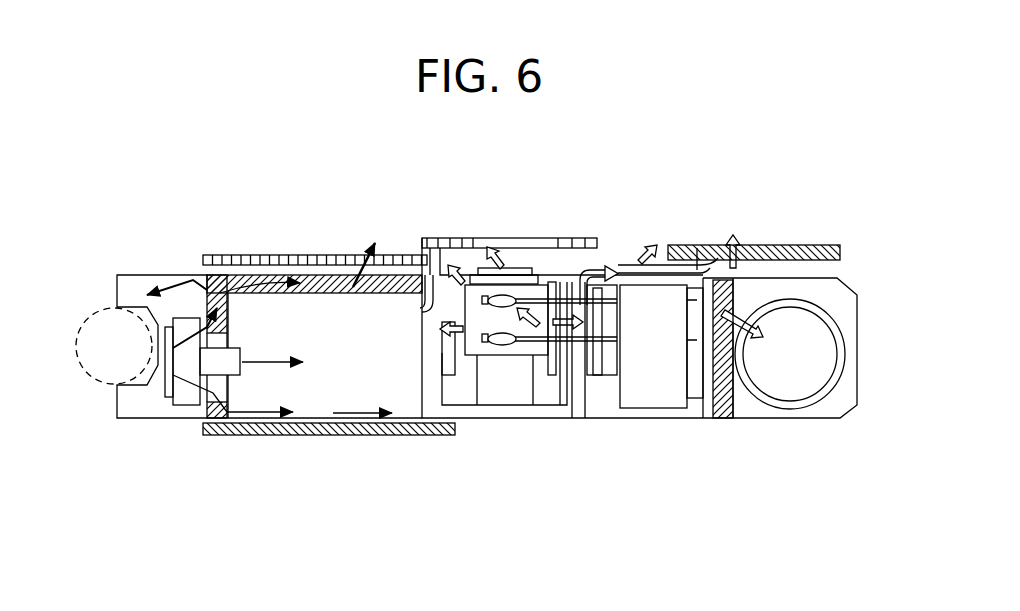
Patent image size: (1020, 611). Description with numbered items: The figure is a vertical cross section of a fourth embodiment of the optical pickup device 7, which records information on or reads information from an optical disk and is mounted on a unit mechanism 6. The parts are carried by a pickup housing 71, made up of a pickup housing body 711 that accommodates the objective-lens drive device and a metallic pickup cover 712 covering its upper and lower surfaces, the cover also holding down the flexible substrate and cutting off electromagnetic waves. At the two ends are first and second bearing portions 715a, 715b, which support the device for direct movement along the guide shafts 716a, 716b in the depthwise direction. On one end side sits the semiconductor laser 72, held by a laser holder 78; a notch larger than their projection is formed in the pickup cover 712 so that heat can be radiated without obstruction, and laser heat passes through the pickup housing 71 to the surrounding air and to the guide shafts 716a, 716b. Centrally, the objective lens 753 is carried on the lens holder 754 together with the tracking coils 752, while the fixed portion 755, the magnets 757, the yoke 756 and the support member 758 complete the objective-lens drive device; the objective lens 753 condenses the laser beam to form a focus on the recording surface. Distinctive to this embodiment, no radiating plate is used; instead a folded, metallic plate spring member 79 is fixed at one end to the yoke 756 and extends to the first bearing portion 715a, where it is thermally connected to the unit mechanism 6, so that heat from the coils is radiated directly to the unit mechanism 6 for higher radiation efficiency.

The unit mechanism 6 is at (808, 246).
The optical pickup device 7 is at (325, 225).
The pickup housing 71 is at (312, 447).
The semiconductor laser 72 is at (163, 390).
The laser holder 78 is at (187, 397).
The plate spring member 79 is at (697, 248).
The pickup housing body 711 is at (722, 420).
The pickup cover 712 is at (247, 255).
The first bearing portion 715a is at (823, 408).
The second bearing portion 715b is at (128, 397).
The guide shaft 716a is at (810, 328).
The guide shaft 716b is at (108, 328).
The tracking coils 752 is at (455, 338).
The objective lens 753 is at (522, 272).
The lens holder 754 is at (473, 300).
The fixed portion 755 is at (652, 388).
The yoke 756 is at (563, 388).
The magnets 757 is at (440, 270).
The support member 758 is at (565, 300).